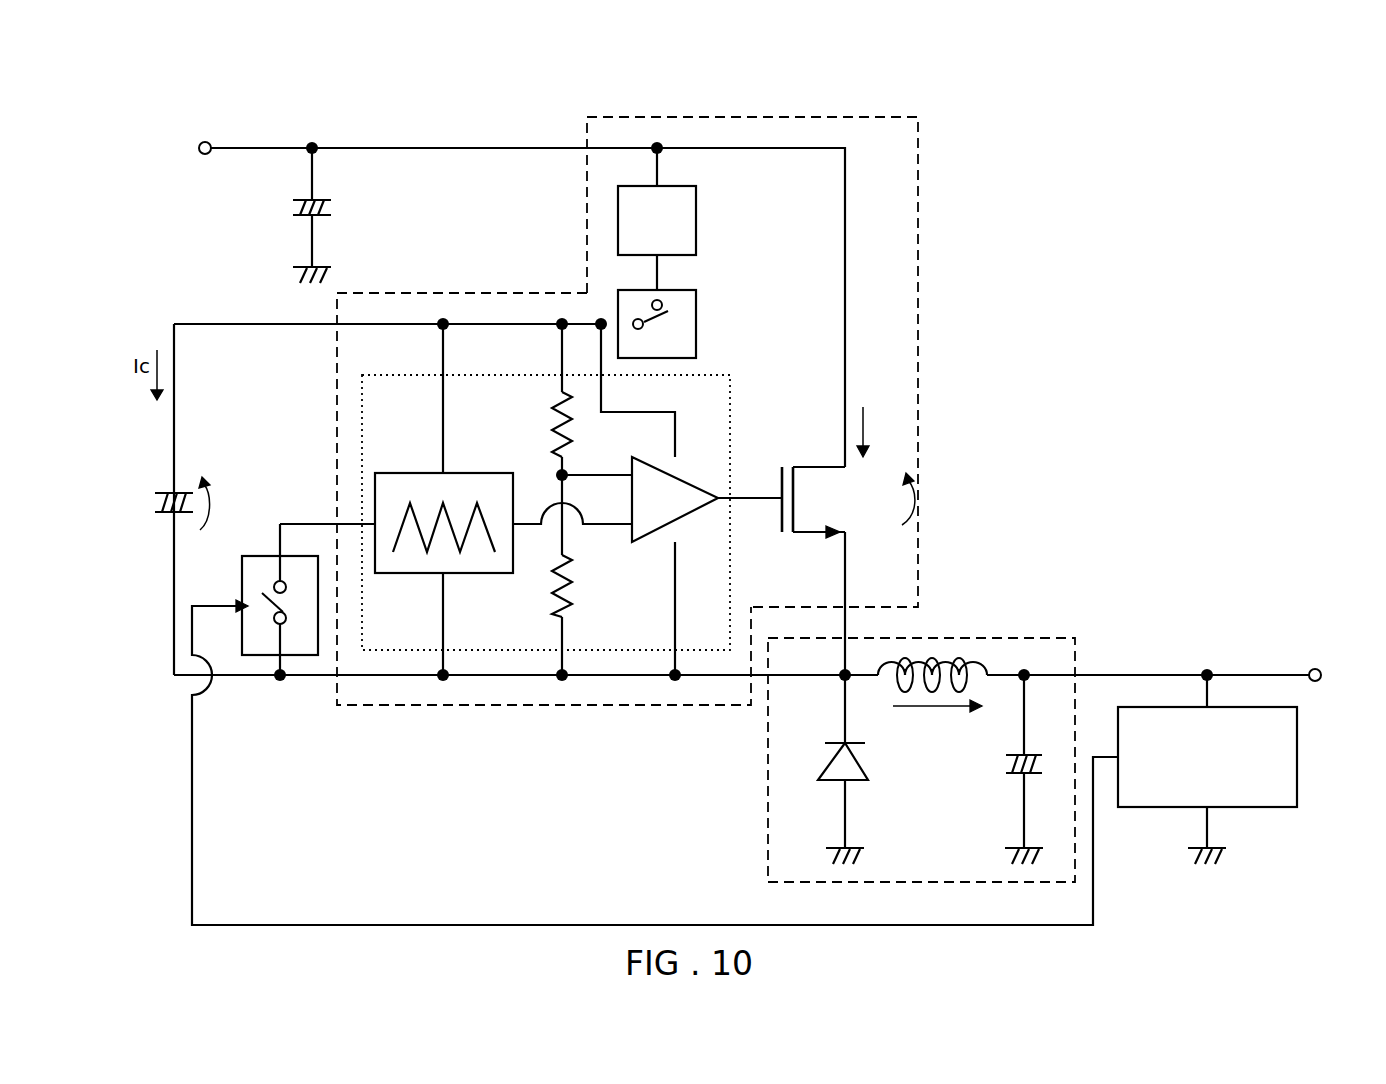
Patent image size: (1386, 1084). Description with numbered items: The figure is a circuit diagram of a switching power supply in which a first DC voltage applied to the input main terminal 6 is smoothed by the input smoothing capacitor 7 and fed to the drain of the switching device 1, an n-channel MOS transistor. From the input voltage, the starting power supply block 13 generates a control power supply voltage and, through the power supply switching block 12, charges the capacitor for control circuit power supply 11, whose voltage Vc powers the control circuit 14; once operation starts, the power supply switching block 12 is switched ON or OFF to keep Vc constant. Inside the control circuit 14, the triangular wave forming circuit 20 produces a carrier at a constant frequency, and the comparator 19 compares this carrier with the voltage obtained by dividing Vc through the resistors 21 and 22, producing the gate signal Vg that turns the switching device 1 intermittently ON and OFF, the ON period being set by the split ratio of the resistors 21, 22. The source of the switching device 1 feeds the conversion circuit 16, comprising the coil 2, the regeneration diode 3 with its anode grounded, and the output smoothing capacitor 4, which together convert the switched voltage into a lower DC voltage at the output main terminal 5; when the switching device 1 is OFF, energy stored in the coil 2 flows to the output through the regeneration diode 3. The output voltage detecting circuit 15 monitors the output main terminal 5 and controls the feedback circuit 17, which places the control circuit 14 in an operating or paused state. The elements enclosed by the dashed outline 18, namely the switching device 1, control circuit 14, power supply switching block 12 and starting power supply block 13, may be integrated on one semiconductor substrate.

The switching device 1 is at (795, 498).
The coil 2 is at (987, 664).
The regeneration diode 3 is at (862, 758).
The output smoothing capacitor 4 is at (1008, 766).
The output main terminal 5 is at (1320, 668).
The input main terminal 6 is at (201, 154).
The input smoothing capacitor 7 is at (332, 210).
The capacitor for control circuit power supply 11 is at (155, 497).
The power supply switching block 12 is at (696, 324).
The starting power supply block 13 is at (696, 218).
The control circuit 14 is at (400, 375).
The output voltage detecting circuit 15 is at (1240, 807).
The conversion circuit 16 is at (1007, 638).
The feedback circuit 17 is at (242, 588).
The integrated elements 18 is at (918, 190).
The comparator 19 is at (655, 543).
The triangular wave forming circuit 20 is at (417, 473).
The resistor 21 is at (558, 445).
The resistor 22 is at (558, 610).